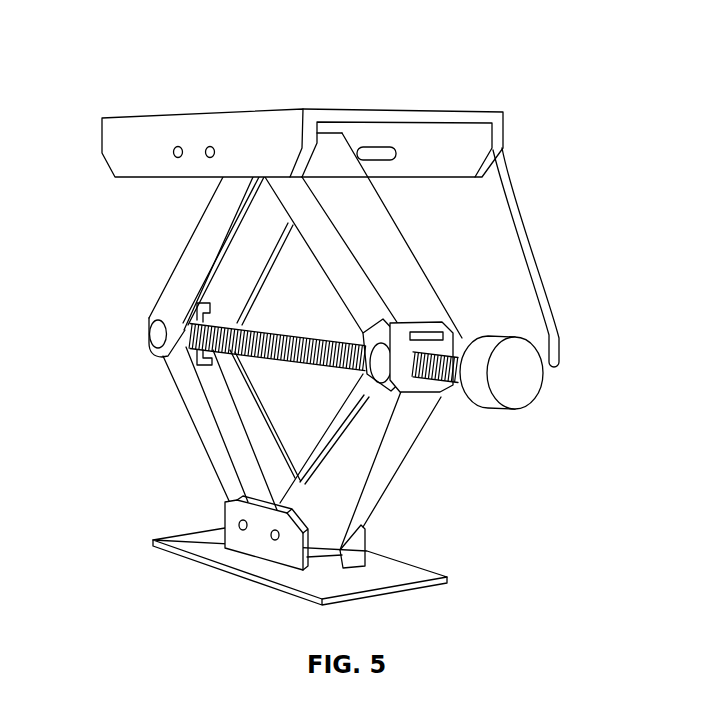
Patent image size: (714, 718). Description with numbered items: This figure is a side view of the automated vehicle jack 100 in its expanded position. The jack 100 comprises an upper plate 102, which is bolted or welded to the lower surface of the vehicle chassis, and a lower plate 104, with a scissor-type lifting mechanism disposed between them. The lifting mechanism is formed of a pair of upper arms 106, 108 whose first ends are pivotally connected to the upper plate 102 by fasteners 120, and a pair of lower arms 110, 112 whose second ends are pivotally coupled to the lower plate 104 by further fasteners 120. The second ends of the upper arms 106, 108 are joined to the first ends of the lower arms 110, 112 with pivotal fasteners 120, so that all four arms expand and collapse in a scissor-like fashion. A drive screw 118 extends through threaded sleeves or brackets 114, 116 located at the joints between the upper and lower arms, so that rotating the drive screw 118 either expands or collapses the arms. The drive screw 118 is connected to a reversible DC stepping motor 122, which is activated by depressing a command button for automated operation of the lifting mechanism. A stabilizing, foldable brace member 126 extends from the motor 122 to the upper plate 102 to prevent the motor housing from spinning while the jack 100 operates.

The vehicle jack 100 is at (522, 77).
The upper plate 102 is at (260, 108).
The lower plate 104 is at (247, 573).
The upper arm 106 is at (203, 225).
The upper arm 108 is at (382, 225).
The lower arm 110 is at (177, 373).
The lower arm 112 is at (362, 503).
The threaded sleeve or bracket 114 is at (135, 347).
The threaded sleeve or bracket 116 is at (414, 395).
The drive screw 118 is at (202, 360).
The fasteners 120 is at (180, 148).
The DC stepping motor 122 is at (517, 376).
The foldable brace member 126 is at (532, 252).